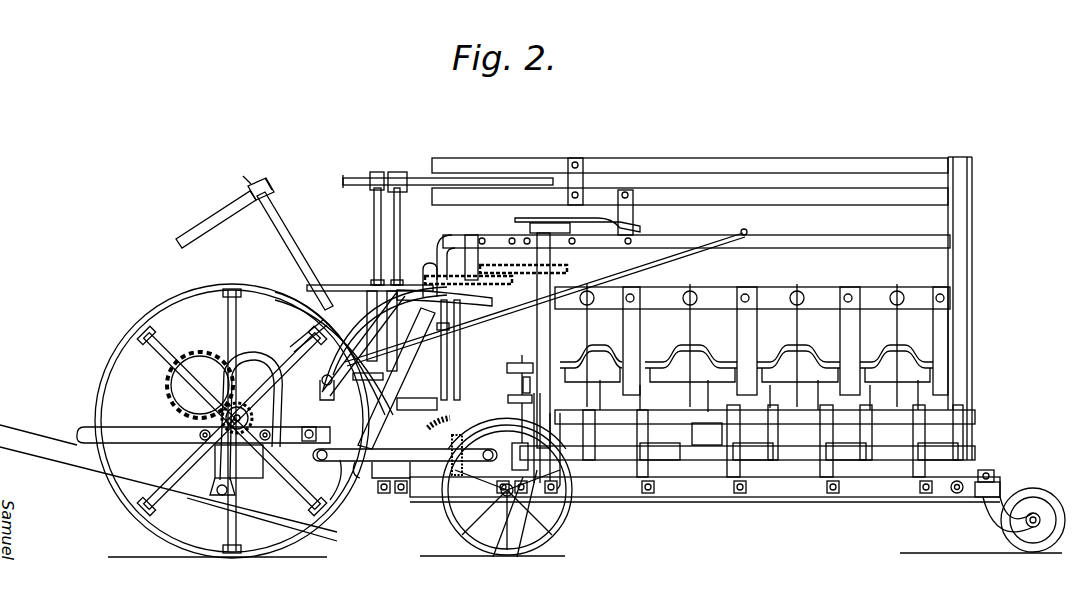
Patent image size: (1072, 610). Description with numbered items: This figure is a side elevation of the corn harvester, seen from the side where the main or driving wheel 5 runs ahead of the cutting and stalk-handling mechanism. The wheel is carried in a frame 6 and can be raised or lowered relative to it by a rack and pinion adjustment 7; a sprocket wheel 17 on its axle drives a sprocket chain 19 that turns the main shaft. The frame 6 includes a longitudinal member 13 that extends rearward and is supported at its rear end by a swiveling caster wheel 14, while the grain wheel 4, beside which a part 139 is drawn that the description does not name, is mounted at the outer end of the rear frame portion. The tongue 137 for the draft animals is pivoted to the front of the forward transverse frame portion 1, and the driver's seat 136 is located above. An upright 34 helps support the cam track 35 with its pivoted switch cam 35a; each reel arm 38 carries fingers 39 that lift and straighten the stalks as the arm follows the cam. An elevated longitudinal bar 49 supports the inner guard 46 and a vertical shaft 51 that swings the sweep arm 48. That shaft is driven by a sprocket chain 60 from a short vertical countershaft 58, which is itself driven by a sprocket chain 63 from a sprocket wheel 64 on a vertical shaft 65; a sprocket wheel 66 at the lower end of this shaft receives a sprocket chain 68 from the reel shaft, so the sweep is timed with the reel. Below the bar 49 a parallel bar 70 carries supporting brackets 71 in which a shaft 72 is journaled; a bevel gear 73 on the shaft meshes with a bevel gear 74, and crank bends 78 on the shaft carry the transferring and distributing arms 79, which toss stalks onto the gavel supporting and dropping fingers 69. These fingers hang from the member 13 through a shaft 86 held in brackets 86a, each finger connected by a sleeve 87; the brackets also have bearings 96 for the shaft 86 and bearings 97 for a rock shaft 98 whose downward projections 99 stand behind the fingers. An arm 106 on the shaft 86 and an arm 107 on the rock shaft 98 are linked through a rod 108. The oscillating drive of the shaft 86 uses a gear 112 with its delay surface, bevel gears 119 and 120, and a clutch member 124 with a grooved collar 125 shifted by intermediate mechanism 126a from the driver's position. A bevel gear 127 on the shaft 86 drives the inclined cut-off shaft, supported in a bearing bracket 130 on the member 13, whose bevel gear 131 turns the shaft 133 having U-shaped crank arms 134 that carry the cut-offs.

The forward transverse portion 1 is at (292, 500).
The grain wheel 4 is at (555, 527).
The main or driving wheel 5 is at (122, 350).
The frame 6 is at (80, 426).
The rack and pinion adjustment 7 is at (222, 415).
The longitudinal member 13 is at (636, 498).
The swiveling caster wheel 14 is at (1040, 489).
The sprocket wheel 17 is at (210, 362).
The sprocket chain 19 is at (328, 412).
The upright 34 is at (290, 368).
The cam track 35 is at (348, 292).
The switch cam 35a is at (296, 284).
The reel arm 38 is at (394, 229).
The fingers 39 is at (194, 245).
The inner guard 46 is at (683, 187).
The sweep arm 48 is at (515, 220).
The elevated longitudinal bar 49 is at (818, 234).
The vertical shaft 51 is at (553, 230).
The short vertical countershaft 58 is at (483, 268).
The sprocket chain 60 is at (568, 268).
The sprocket chain 63 is at (512, 281).
The sprocket wheel 64 is at (427, 283).
The vertical shaft 65 is at (447, 354).
The sprocket wheel 66 is at (440, 410).
The sprocket chain 68 is at (405, 400).
The gavel supporting and dropping fingers 69 is at (670, 490).
The bar 70 is at (820, 294).
The supporting brackets 71 is at (852, 300).
The shaft 72 is at (720, 360).
The bevel gear 73 is at (524, 362).
The bevel gear 74 is at (512, 366).
The crank bends 78 is at (595, 352).
The transferring and distributing arm 79 is at (706, 333).
The shaft 86 is at (614, 471).
The brackets 86a is at (740, 470).
The sleeve 87 is at (860, 468).
The bearings 96 is at (650, 443).
The bearings 97 is at (730, 408).
The rock shaft 98 is at (706, 434).
The projections 99 is at (996, 427).
The arm 106 is at (518, 440).
The arm 107 is at (548, 410).
The rod 108 is at (522, 528).
The gear 112 is at (400, 495).
The bevel gear 119 is at (445, 485).
The bevel gear 120 is at (358, 500).
The clutch member 124 is at (460, 508).
The grooved collar 125 is at (507, 458).
The intermediate mechanism 126a is at (350, 472).
The bevel gear 127 is at (494, 450).
The bearing bracket 130 is at (495, 531).
The bevel gear 131 is at (508, 399).
The shaft 133 is at (520, 388).
The U-shaped bends or crank arms 134 is at (568, 355).
The driver's seat 136 is at (470, 320).
The tongue 137 is at (22, 434).
The spoke 139 is at (473, 534).